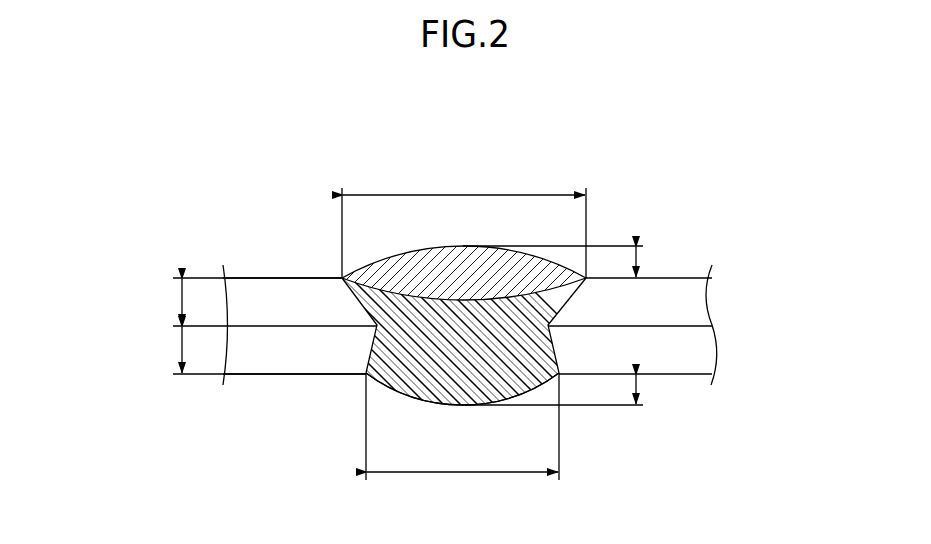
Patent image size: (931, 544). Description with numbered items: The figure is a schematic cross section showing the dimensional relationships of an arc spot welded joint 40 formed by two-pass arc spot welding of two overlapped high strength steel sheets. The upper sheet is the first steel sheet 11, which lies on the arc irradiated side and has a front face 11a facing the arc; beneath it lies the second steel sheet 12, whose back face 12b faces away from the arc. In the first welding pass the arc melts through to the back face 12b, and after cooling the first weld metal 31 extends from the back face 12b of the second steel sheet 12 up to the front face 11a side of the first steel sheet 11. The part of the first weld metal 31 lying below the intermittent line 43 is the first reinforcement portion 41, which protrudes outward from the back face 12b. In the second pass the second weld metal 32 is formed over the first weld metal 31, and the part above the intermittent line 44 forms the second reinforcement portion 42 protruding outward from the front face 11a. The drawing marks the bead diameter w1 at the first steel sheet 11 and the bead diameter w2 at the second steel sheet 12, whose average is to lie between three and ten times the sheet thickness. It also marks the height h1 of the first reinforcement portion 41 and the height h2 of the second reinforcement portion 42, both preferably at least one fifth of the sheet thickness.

The first steel sheet 11 is at (683, 299).
The front face 11a is at (279, 278).
The second steel sheet 12 is at (688, 351).
The back face 12b is at (277, 374).
The first weld metal 31 is at (410, 386).
The second weld metal 32 is at (385, 266).
The arc spot welded joint 40 is at (431, 304).
The first reinforcement portion 41 is at (431, 365).
The second reinforcement portion 42 is at (442, 254).
The intermittent line 43 is at (511, 405).
The intermittent line 44 is at (515, 275).
The bead diameter w1 is at (462, 196).
The bead diameter w2 is at (462, 475).
The height of first reinforcement portion h1 is at (645, 392).
The height of second reinforcement portion h2 is at (645, 262).